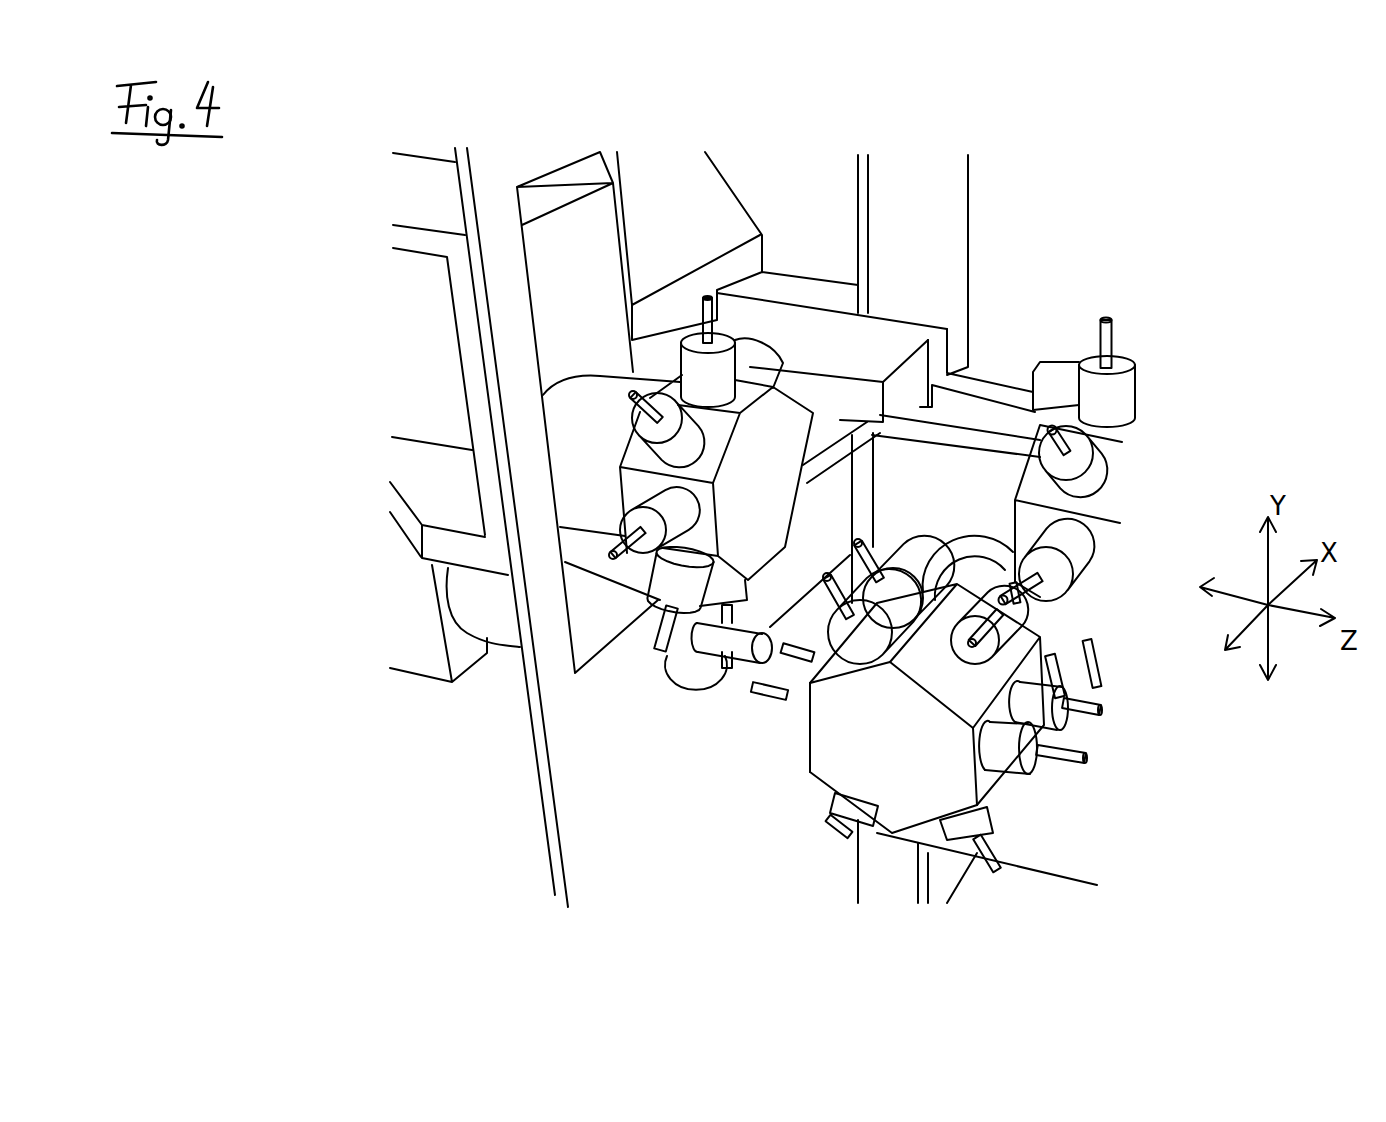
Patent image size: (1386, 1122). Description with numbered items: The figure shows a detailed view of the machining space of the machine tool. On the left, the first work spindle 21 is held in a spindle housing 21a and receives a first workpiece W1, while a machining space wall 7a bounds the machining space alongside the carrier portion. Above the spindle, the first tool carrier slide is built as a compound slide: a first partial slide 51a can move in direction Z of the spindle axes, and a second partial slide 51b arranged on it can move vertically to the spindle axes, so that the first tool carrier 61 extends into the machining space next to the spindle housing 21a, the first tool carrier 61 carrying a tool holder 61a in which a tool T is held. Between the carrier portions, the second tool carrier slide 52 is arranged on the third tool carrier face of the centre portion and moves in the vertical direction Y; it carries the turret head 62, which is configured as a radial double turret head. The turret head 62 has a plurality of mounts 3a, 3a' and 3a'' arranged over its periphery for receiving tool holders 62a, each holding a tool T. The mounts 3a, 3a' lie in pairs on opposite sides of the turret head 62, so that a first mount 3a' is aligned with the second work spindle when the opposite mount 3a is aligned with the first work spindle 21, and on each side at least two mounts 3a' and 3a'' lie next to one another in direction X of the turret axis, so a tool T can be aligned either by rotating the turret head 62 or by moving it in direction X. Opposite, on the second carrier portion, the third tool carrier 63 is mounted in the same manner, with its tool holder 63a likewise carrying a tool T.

The machining space wall 7a is at (578, 808).
The spindle housing 21a is at (423, 660).
The first work spindle 21 is at (685, 648).
The first partial slide 51a is at (660, 210).
The second partial slide 51b is at (567, 240).
The second tool carrier slide 52 is at (950, 473).
The first tool carrier 61 is at (780, 437).
The tool holder cylinder 61a is at (717, 367).
The turret head 62 is at (1000, 800).
The tool holder 62a is at (800, 707).
The third tool carrier 63 is at (1062, 412).
The tool holder cylinder 63a is at (1123, 393).
The mount 3a is at (764, 764).
The first mount 3a' is at (1118, 753).
The second mount 3a'' is at (1096, 663).
The tool T is at (703, 300).
The first workpiece W1 is at (703, 663).